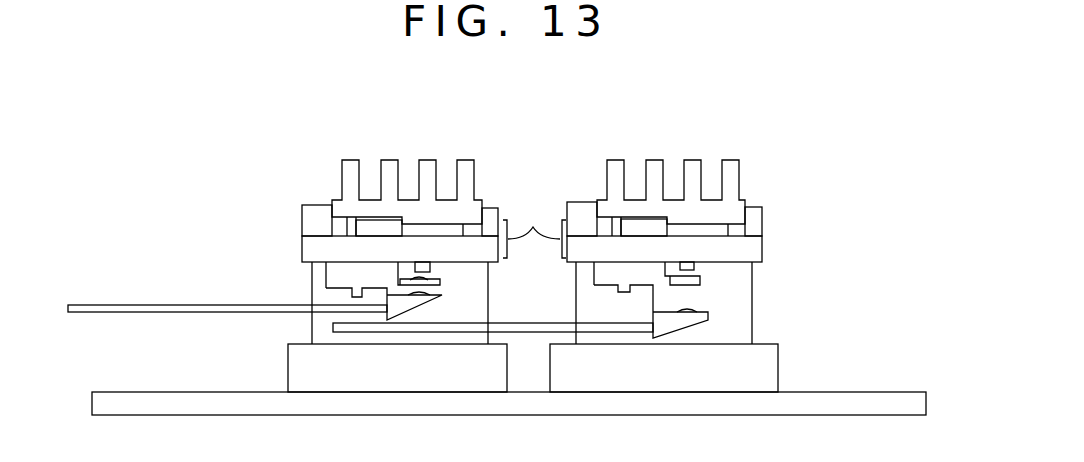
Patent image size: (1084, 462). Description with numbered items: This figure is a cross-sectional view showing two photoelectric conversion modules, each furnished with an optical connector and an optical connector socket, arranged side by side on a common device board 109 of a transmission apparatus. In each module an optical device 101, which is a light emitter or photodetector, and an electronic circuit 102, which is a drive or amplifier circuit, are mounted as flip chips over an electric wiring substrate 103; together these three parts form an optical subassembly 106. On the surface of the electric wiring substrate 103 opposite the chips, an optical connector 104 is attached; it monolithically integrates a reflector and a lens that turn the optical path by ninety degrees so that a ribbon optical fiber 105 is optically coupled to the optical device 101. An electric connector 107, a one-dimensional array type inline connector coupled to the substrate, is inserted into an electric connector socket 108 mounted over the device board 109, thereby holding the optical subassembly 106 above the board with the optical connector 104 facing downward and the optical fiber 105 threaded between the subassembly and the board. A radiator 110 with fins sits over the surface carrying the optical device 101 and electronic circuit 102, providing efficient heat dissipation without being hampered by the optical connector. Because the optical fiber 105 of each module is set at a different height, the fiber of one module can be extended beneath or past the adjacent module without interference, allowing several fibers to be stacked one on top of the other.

The optical device 101 is at (424, 268).
The electronic circuit 102 is at (372, 227).
The electric wiring substrate 103 is at (302, 247).
The optical connector 104 is at (322, 297).
The ribbon optical fiber 105 is at (190, 306).
The optical subassembly 106 is at (534, 226).
The electric connector 107 is at (322, 325).
The electric connector socket 108 is at (292, 380).
The device board 109 is at (165, 398).
The radiator 110 is at (353, 183).